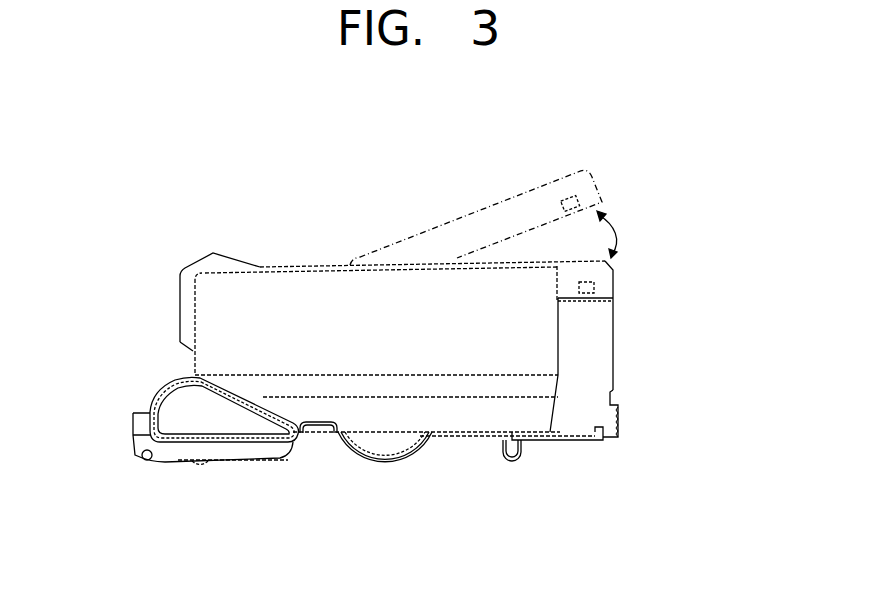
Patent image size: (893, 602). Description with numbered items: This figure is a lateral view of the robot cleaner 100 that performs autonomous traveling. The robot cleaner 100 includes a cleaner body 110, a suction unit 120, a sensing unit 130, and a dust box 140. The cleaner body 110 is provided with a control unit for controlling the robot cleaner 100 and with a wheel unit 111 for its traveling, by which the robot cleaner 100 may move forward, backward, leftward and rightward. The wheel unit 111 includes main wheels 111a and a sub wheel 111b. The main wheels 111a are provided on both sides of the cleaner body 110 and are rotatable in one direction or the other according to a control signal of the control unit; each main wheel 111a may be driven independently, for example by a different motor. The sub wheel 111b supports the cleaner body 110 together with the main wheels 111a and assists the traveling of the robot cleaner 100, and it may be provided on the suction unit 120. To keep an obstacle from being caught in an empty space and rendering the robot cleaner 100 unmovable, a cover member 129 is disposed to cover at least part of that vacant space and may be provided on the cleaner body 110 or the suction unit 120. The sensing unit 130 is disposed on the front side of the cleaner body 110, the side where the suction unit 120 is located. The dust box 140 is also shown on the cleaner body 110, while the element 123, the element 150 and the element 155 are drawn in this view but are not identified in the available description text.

The robot cleaner 100 is at (216, 173).
The cleaner body 110 is at (339, 294).
The wheel unit 111 is at (483, 531).
The main wheels 111a is at (403, 458).
The sub wheel 111b is at (508, 462).
The suction unit 120 is at (235, 424).
The bumper sensor 123 is at (147, 462).
The cover member 129 is at (320, 434).
The sensing unit 130 is at (205, 257).
The dust box 140 is at (590, 353).
The cover lid 150 is at (608, 272).
The locking member 155 is at (579, 283).